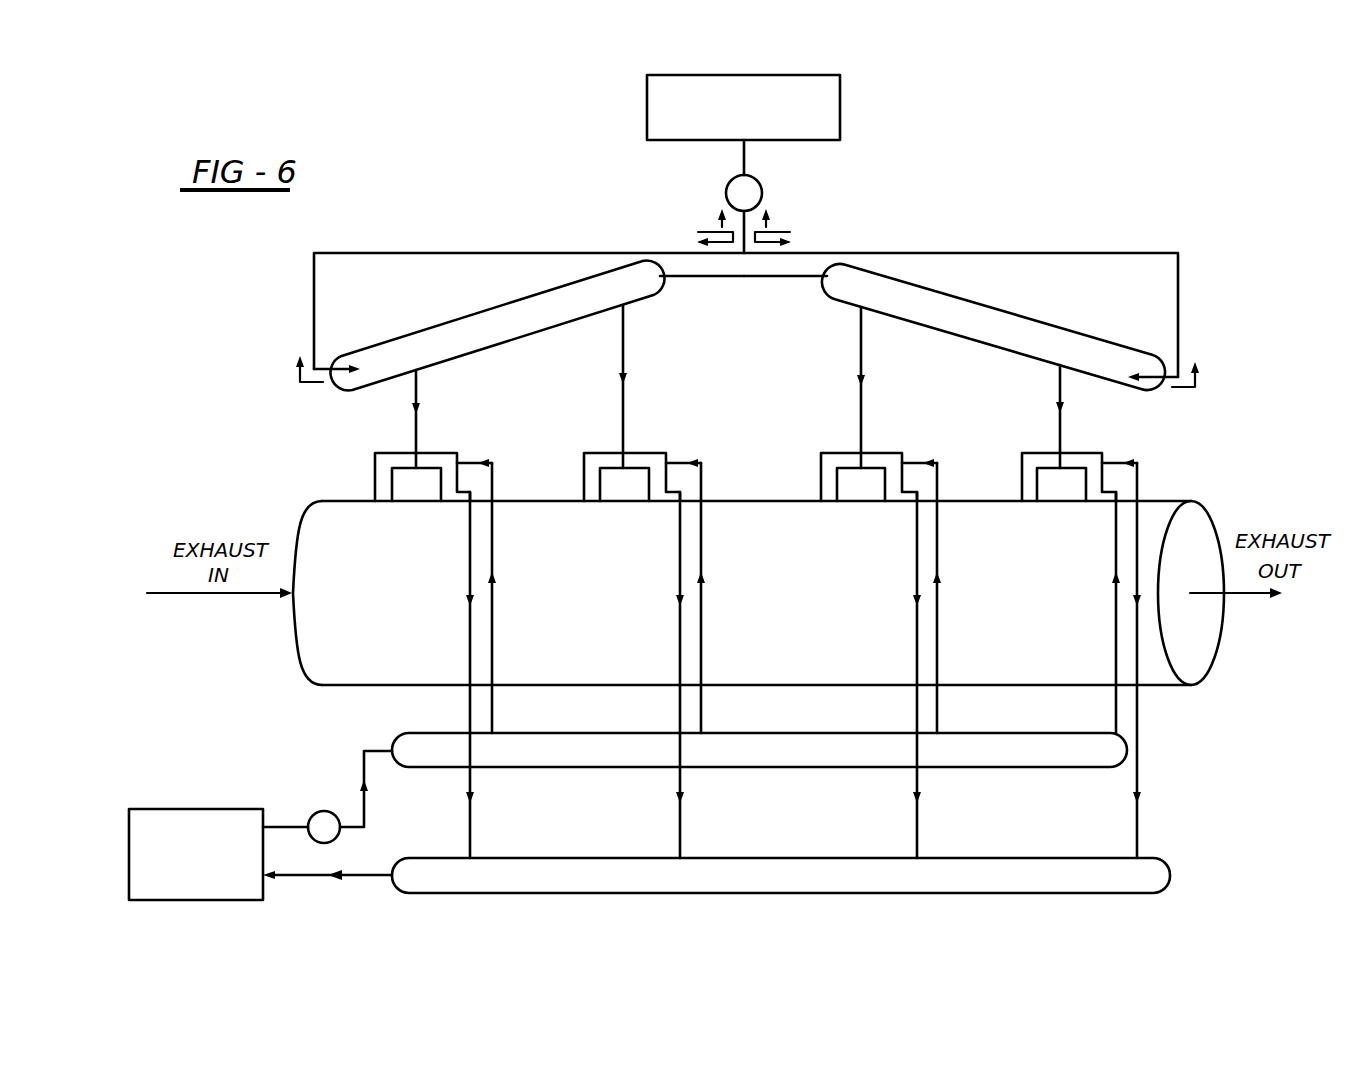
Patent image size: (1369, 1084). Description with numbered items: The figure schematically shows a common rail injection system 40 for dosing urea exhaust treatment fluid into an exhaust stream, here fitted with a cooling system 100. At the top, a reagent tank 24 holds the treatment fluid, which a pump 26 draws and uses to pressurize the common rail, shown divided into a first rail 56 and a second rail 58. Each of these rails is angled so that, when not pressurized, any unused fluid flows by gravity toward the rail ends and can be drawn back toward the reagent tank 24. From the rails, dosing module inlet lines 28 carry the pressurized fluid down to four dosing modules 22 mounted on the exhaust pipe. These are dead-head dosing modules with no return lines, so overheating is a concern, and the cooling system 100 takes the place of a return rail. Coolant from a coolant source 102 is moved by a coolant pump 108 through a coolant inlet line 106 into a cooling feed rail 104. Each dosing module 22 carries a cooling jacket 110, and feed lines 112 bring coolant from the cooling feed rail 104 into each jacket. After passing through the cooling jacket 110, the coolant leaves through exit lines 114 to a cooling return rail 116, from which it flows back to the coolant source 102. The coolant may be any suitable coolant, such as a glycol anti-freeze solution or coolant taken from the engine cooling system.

The dosing module 22 is at (420, 488).
The reagent tank 24 is at (761, 117).
The pump 26 is at (762, 187).
The dosing module inlet line 28 is at (417, 435).
The common rail injection system 40 is at (1032, 166).
The first rail 56 is at (487, 348).
The second rail 58 is at (945, 332).
The cooling system 100 is at (1180, 788).
The coolant source 102 is at (192, 808).
The cooling feed rail 104 is at (985, 768).
The coolant inlet line 106 is at (362, 758).
The coolant pump 108 is at (331, 810).
The cooling jacket 110 is at (375, 487).
The feed line 112 is at (492, 625).
The exit line 114 is at (470, 658).
The cooling return rail 116 is at (545, 858).